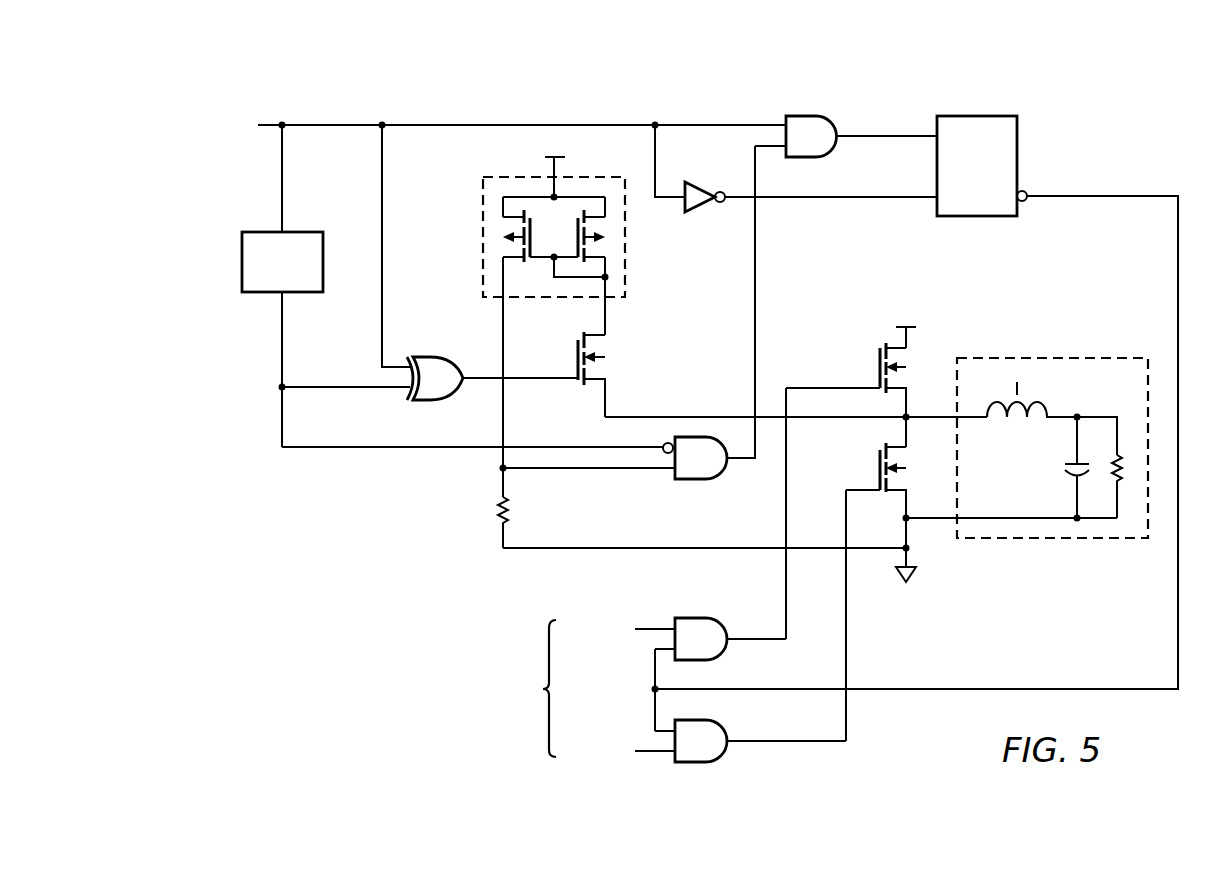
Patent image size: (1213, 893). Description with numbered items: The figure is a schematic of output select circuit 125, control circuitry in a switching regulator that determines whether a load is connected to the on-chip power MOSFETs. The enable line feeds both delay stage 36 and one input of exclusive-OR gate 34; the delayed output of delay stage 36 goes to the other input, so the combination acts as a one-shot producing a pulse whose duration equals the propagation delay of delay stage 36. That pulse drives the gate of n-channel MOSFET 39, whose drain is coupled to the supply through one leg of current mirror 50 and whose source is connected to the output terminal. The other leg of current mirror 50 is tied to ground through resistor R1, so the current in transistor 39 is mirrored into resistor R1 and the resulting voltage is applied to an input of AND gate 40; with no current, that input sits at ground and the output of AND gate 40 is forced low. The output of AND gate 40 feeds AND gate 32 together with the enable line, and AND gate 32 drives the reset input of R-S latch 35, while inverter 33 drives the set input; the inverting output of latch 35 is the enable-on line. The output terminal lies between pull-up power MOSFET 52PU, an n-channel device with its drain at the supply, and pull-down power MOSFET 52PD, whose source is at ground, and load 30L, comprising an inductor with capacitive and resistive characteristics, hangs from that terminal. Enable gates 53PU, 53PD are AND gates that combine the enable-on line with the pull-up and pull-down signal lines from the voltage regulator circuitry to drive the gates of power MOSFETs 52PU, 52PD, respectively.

The output select circuit 125 is at (446, 76).
The delay stage 36 is at (241, 262).
The current mirror 50 is at (476, 213).
The n-channel MOSFET 39 is at (576, 347).
The resistor R1 is at (519, 522).
The exclusive-OR gate 34 is at (458, 358).
The inverter 33 is at (700, 190).
The AND gate 32 is at (808, 115).
The R-S latch 35 is at (978, 115).
The AND gate 40 is at (697, 480).
The pull-up on-chip power MOSFET 52PU is at (880, 356).
The pull-down on-chip power MOSFET 52PD is at (880, 458).
The load 30L is at (1057, 548).
The enable gate 53PU is at (700, 617).
The enable gate 53PD is at (700, 763).